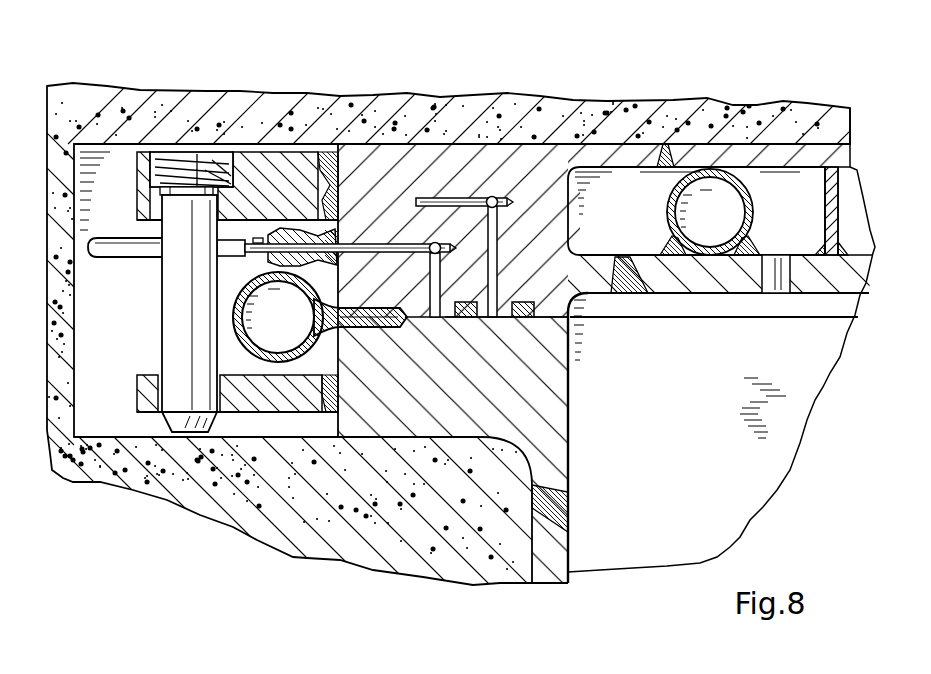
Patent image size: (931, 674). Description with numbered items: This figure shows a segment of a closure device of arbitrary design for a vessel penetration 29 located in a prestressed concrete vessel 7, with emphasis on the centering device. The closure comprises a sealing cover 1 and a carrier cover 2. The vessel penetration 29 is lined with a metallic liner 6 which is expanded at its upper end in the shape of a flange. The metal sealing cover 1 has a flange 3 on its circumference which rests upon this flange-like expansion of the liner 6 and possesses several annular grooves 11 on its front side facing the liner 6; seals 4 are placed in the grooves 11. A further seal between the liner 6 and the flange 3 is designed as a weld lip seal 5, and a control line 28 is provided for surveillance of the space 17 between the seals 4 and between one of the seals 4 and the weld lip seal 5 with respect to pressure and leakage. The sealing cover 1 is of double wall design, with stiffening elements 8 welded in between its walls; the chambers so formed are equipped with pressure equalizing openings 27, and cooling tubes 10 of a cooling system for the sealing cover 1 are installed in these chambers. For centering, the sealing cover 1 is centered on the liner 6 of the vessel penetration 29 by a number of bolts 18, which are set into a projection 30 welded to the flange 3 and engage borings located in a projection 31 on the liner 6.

The sealing cover 1 is at (793, 150).
The carrier cover 2 is at (490, 122).
The flange 3 is at (553, 207).
The seals 4 is at (473, 318).
The weld lip seal 5 is at (240, 287).
The metallic liner 6 is at (557, 553).
The prestressed concrete vessel 7 is at (373, 527).
The stiffening elements 8 is at (830, 167).
The cooling tubes 10 is at (717, 183).
The annular grooves 11 is at (572, 323).
The space 17 is at (422, 310).
The bolts 18 is at (192, 158).
The pressure equalizing openings 27 is at (778, 287).
The control line 28 is at (123, 247).
The vessel penetration 29 is at (671, 486).
The projection 30 is at (140, 157).
The projection 31 is at (240, 397).